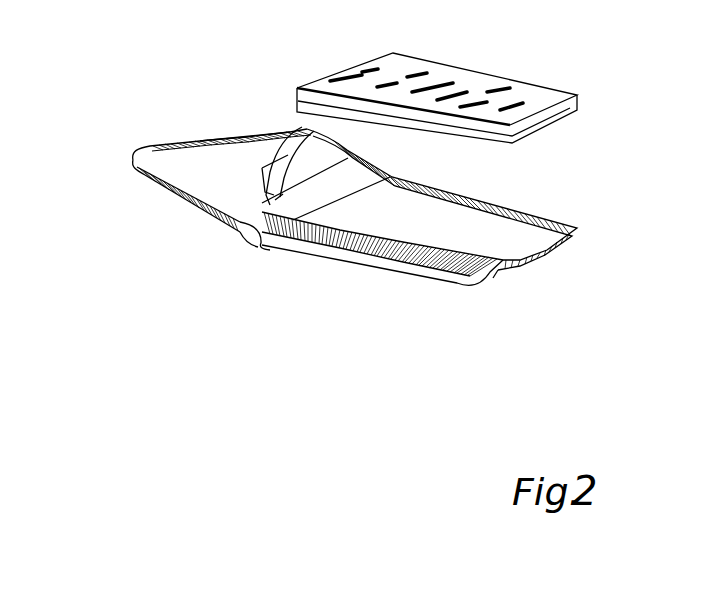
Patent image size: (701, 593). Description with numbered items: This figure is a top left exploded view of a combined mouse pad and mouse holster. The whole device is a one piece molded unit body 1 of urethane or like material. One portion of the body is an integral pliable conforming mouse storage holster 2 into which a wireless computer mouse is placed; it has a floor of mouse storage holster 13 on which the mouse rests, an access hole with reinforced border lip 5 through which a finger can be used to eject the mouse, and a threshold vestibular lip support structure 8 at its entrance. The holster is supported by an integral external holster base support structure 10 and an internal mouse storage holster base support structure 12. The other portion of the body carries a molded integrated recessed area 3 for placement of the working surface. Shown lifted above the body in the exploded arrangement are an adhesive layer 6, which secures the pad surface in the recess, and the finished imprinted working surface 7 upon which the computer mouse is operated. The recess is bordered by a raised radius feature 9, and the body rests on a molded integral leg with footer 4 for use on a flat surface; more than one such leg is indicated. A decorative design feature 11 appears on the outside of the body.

The one piece molded unit body 1 is at (147, 174).
The integral pliable conforming mouse storage holster 2 is at (182, 155).
The molded integrated recessed area 3 is at (465, 218).
The molded integral leg with footer 4 is at (543, 248).
The access hole with reinforced border lip 5 is at (241, 137).
The adhesive layer 6 is at (443, 125).
The finished imprinted working surface 7 is at (403, 66).
The threshold vestibular lip support structure 8 is at (285, 180).
The raised radius feature 9 is at (518, 265).
The integral external holster base support structure 10 is at (330, 162).
The decorative design feature 11 is at (405, 268).
The internal mouse storage holster base support structure 12 is at (303, 190).
The floor of mouse storage holster 13 is at (267, 197).